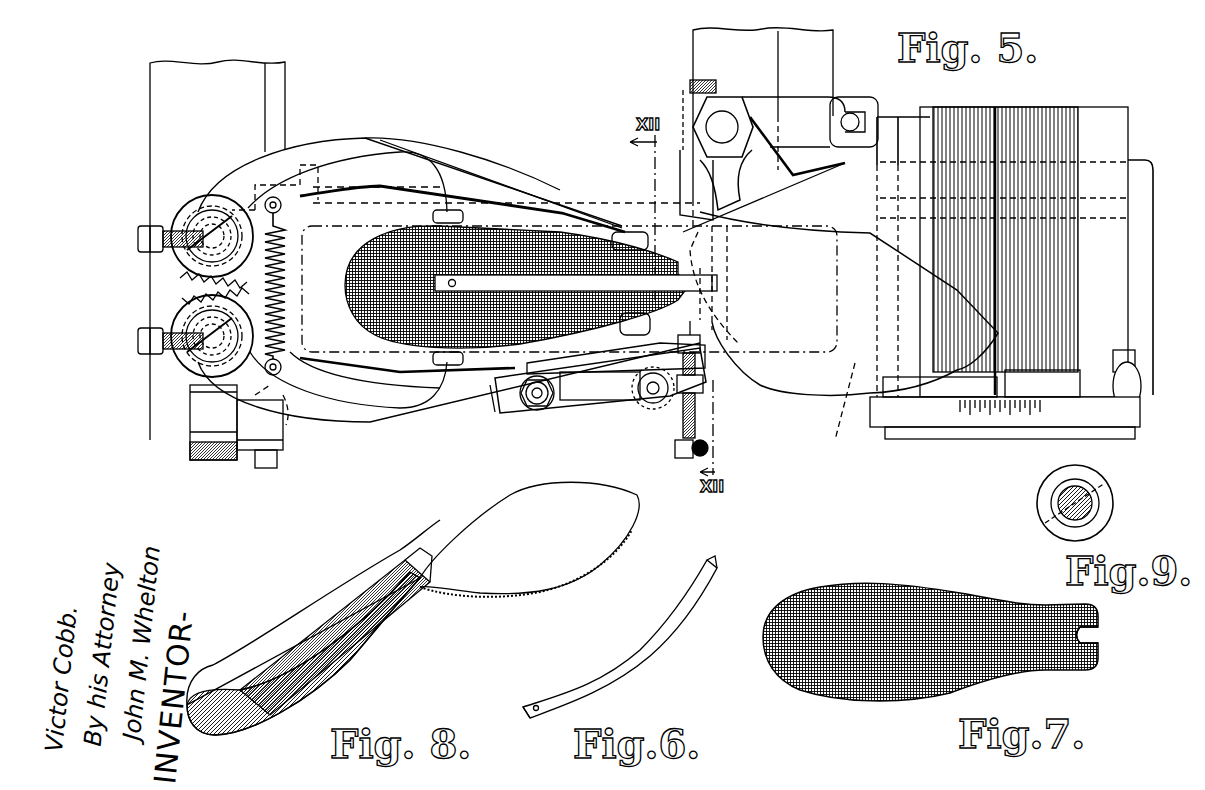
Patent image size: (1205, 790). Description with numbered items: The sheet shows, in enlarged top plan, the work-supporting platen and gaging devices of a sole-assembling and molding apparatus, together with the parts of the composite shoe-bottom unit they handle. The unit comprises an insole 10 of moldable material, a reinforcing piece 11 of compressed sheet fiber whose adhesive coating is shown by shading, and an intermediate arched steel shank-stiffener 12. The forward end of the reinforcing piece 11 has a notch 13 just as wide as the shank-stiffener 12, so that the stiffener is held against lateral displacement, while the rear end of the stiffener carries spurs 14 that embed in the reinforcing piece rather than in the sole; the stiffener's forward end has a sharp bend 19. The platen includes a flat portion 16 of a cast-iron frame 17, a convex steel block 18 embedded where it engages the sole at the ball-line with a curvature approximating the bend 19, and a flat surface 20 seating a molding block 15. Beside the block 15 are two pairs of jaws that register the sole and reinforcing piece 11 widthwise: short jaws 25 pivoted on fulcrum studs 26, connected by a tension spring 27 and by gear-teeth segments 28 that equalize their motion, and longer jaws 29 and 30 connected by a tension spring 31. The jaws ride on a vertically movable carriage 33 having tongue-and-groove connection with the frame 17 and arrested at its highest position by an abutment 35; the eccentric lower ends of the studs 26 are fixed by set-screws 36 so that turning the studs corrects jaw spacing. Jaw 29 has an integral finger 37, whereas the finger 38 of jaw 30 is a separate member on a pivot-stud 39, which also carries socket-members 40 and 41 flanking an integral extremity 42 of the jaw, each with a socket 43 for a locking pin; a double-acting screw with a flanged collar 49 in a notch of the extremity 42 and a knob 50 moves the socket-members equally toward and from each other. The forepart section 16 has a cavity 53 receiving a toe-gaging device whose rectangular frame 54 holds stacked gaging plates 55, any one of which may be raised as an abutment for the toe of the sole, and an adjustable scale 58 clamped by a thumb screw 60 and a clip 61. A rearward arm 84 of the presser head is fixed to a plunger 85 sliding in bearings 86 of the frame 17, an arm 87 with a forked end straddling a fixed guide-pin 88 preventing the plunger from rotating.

In FIG. 5, the insole 10 is at (812, 388).
In FIG. 8, the insole 10 is at (562, 578).
In FIG. 5, the reinforcing piece 11 is at (517, 287).
In FIG. 8, the reinforcing piece 11 is at (240, 660).
In FIG. 7, the reinforcing piece 11 is at (848, 700).
In FIG. 5, the shank-stiffener 12 is at (498, 276).
In FIG. 8, the shank-stiffener 12 is at (402, 578).
In FIG. 6, the shank-stiffener 12 is at (680, 596).
In FIG. 7, the notch 13 is at (1085, 635).
In FIG. 5, the spurs 14 is at (455, 278).
In FIG. 6, the spurs 14 is at (536, 703).
In FIG. 5, the molding block 15 is at (350, 320).
In FIG. 5, the flat portion 16 is at (890, 186).
In FIG. 5, the cast-iron frame 17 is at (838, 410).
In FIG. 5, the steel block 18 is at (705, 303).
In FIG. 5, the sharp bend 19 is at (719, 282).
In FIG. 8, the sharp bend 19 is at (418, 550).
In FIG. 6, the sharp bend 19 is at (713, 567).
In FIG. 5, the flat surface 20 is at (360, 372).
In FIG. 5, the jaws 25 is at (352, 148).
In FIG. 5, the fulcrum studs 26 is at (190, 225).
In FIG. 9, the fulcrum studs 26 is at (1100, 488).
In FIG. 5, the tension spring 27 is at (268, 291).
In FIG. 5, the gear-teeth segments 28 is at (188, 282).
In FIG. 5, the longer jaw 29 is at (460, 156).
In FIG. 5, the longer jaw 30 is at (466, 414).
In FIG. 5, the tension spring 31 is at (290, 266).
In FIG. 5, the carriage 33 is at (290, 420).
In FIG. 5, the abutment 35 is at (198, 420).
In FIG. 5, the set-screws 36 is at (137, 240).
In FIG. 5, the work-engaging finger 37 is at (625, 228).
In FIG. 5, the work-engaging finger 38 is at (628, 330).
In FIG. 5, the pivot-stud 39 is at (534, 400).
In FIG. 5, the socket-member 40 is at (568, 414).
In FIG. 5, the socket-member 41 is at (566, 362).
In FIG. 5, the extremity 42 is at (600, 398).
In FIG. 5, the socket 43 is at (650, 404).
In FIG. 5, the flanged collar 49 is at (702, 392).
In FIG. 5, the knob 50 is at (678, 452).
In FIG. 5, the cavity 53 is at (1148, 246).
In FIG. 5, the frame 54 is at (1120, 140).
In FIG. 5, the gaging plates 55 is at (990, 383).
In FIG. 5, the scale 58 is at (954, 430).
In FIG. 5, the thumb screw 60 is at (1140, 398).
In FIG. 5, the clip 61 is at (1130, 356).
In FIG. 5, the arm 84 is at (718, 202).
In FIG. 5, the plunger 85 is at (726, 112).
In FIG. 5, the bearings 86 is at (773, 138).
In FIG. 5, the arm 87 is at (796, 108).
In FIG. 5, the guide-pin 88 is at (858, 118).